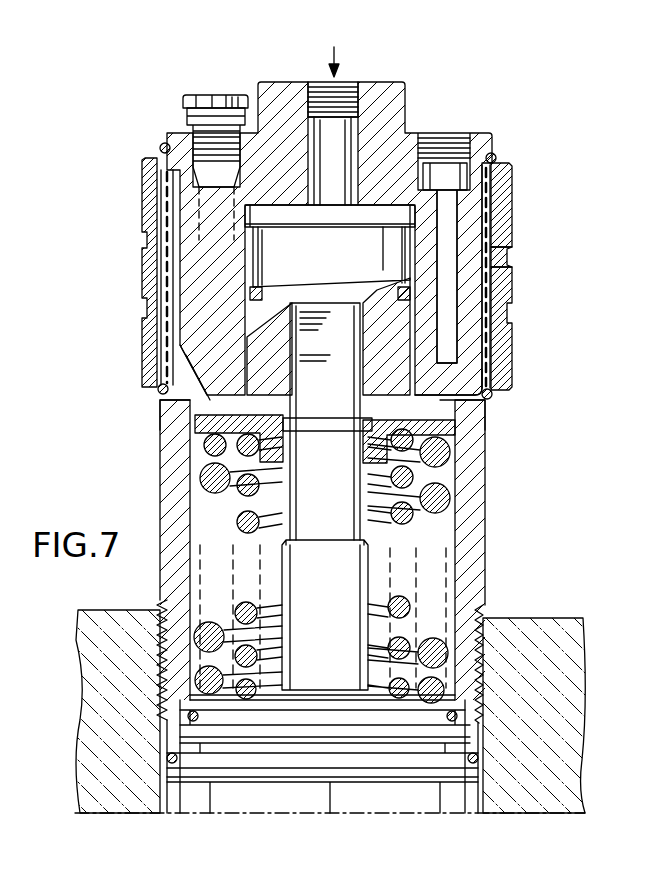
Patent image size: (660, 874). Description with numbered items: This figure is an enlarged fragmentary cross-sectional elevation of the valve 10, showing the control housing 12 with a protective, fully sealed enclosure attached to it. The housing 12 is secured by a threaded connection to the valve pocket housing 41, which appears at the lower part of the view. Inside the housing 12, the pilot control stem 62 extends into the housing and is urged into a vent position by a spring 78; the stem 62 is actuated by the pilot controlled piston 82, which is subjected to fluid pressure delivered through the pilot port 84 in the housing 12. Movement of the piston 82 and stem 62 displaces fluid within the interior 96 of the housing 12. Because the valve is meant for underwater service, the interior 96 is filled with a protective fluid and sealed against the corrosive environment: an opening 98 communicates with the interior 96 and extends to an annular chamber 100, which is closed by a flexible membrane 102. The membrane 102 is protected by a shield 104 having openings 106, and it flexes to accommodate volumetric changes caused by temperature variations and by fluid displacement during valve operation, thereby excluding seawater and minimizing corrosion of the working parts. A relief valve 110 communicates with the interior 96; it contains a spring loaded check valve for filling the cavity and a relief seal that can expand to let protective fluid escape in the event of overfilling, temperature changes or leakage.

The valve 10 is at (500, 488).
The control housing 12 is at (488, 540).
The valve pocket housing 41 is at (517, 620).
The pilot control stem 62 is at (355, 578).
The spring 78 is at (458, 450).
The pilot controlled piston 82 is at (390, 348).
The pilot port 84 is at (343, 83).
The interior 96 is at (445, 408).
The opening 98 is at (163, 403).
The annular chamber 100 is at (168, 270).
The flexible membrane 102 is at (508, 218).
The shield 104 is at (512, 285).
The openings 106 is at (515, 250).
The relief valve 110 is at (182, 104).